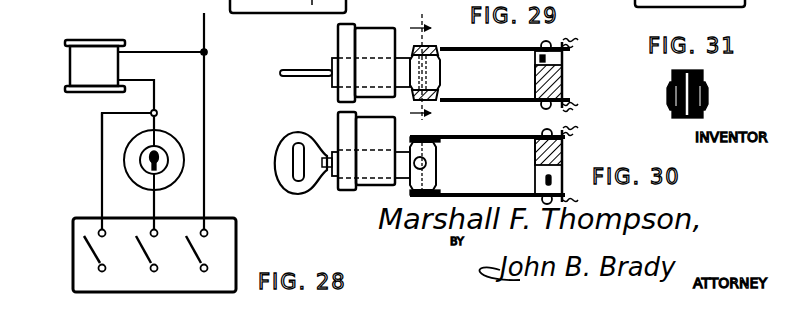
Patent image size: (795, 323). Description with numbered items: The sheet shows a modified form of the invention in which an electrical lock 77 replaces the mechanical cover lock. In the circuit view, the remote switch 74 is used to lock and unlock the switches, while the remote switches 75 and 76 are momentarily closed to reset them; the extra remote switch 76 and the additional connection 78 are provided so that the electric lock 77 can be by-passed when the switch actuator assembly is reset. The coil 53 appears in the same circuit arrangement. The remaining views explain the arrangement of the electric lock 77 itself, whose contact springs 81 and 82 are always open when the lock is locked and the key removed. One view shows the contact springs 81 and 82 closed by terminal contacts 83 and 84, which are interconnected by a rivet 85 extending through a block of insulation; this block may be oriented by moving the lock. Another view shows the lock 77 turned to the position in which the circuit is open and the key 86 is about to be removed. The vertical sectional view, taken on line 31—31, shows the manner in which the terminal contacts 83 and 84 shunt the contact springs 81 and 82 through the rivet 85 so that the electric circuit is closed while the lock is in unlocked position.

In FIG. 28, the coil 53 is at (73, 66).
In FIG. 28, the remote switch 74 is at (154, 255).
In FIG. 28, the remote switch 75 is at (208, 256).
In FIG. 28, the additional remote switch 76 is at (90, 253).
In FIG. 28, the electrical lock 77 is at (172, 148).
In FIG. 29, the electrical lock 77 is at (362, 50).
In FIG. 30, the electrical lock 77 is at (374, 168).
In FIG. 28, the connection 78 is at (100, 140).
In FIG. 29, the contact spring 81 is at (497, 52).
In FIG. 30, the contact spring 81 is at (478, 140).
In FIG. 31, the contact spring 81 is at (699, 72).
In FIG. 29, the contact spring 82 is at (488, 103).
In FIG. 30, the contact spring 82 is at (485, 195).
In FIG. 31, the contact spring 82 is at (690, 119).
In FIG. 29, the terminal contact 83 is at (366, 72).
In FIG. 30, the terminal contact 83 is at (438, 163).
In FIG. 31, the terminal contact 83 is at (672, 78).
In FIG. 29, the terminal contact 84 is at (441, 97).
In FIG. 31, the terminal contact 84 is at (675, 113).
In FIG. 29, the rivet 85 is at (437, 36).
In FIG. 30, the rivet 85 is at (412, 162).
In FIG. 31, the rivet 85 is at (668, 97).
In FIG. 29, the key 86 is at (441, 75).
In FIG. 30, the key 86 is at (281, 172).
In FIG. 31, the key 86 is at (709, 92).
In FIG. 29, the section line 31 is at (419, 67).